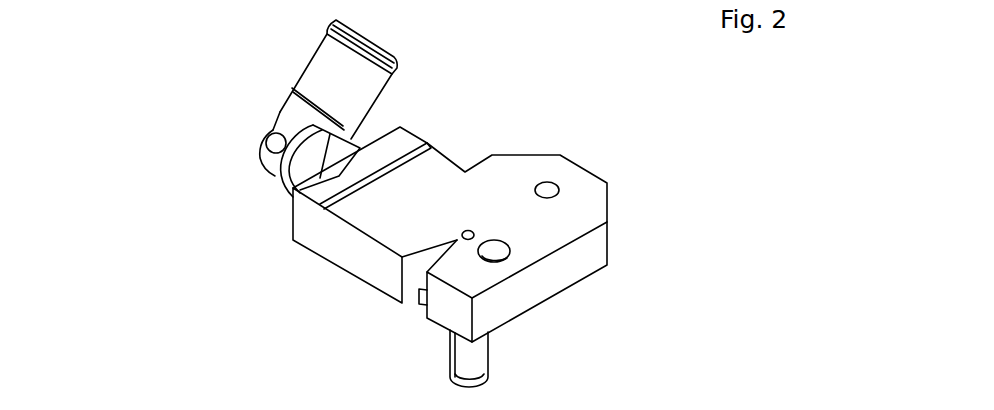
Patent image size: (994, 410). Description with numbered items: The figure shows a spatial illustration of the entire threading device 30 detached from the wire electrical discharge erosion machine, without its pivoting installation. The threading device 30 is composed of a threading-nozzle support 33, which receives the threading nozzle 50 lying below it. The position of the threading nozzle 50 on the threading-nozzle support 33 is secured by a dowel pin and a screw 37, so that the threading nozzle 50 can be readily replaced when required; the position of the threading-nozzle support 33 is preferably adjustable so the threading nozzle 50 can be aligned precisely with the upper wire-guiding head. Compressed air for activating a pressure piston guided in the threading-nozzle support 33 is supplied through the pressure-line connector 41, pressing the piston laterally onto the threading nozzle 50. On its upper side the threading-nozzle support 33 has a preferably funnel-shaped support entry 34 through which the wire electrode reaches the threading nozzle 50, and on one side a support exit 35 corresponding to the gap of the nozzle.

The threading device 30 is at (560, 133).
The threading-nozzle support 33 is at (348, 252).
The support entry 34 is at (470, 233).
The support exit 35 is at (418, 285).
The screw 37 is at (504, 254).
The pressure-line connector 41 is at (310, 82).
The threading nozzle 50 is at (470, 357).